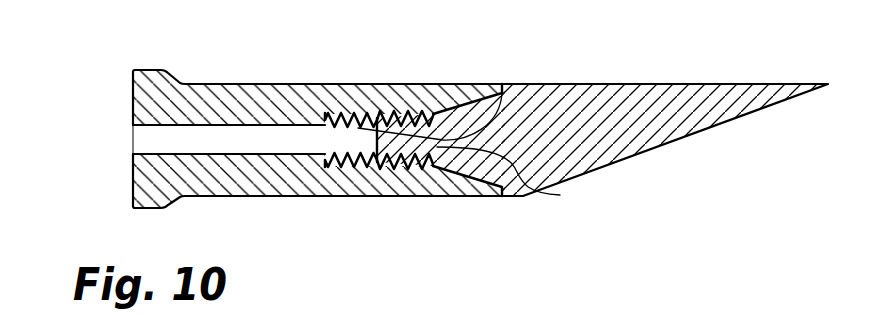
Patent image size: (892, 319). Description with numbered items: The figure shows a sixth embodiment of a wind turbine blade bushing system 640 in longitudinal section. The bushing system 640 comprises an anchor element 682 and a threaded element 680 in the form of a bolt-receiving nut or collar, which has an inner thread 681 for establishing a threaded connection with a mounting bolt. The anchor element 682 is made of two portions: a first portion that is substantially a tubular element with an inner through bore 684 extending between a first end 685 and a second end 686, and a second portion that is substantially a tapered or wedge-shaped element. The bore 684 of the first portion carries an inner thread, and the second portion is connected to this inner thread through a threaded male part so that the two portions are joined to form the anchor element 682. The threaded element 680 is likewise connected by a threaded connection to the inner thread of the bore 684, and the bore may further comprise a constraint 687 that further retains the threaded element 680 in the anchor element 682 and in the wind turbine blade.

The wind turbine blade bushing system 640 is at (667, 68).
The threaded element 680 is at (357, 100).
The inner thread 681 is at (505, 84).
The anchor element 682 is at (342, 74).
The inner through bore 684 is at (180, 143).
The first end 685 is at (133, 149).
The second end 686 is at (560, 195).
The constraint 687 is at (334, 167).